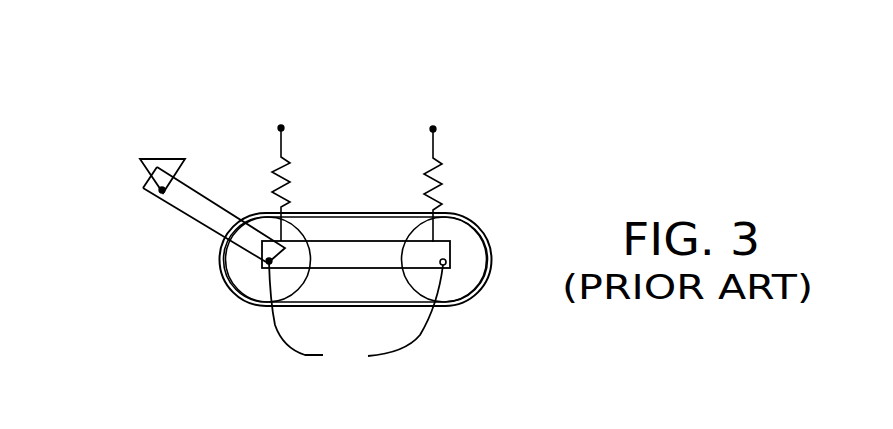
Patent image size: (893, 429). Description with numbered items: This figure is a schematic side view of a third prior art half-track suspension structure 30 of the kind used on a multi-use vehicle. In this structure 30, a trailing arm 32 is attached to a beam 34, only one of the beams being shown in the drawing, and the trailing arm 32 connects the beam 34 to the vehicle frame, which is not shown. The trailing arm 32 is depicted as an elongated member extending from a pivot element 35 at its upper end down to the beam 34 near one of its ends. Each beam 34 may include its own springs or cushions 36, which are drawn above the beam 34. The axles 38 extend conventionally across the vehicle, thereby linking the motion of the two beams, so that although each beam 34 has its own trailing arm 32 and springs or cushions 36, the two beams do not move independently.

The multi-use vehicle suspension structure 30 is at (158, 269).
The trailing arm 32 is at (207, 198).
The beam 34 is at (345, 241).
The pivot 35 is at (155, 159).
The springs or cushions 36 is at (433, 150).
The axles 38 is at (356, 317).